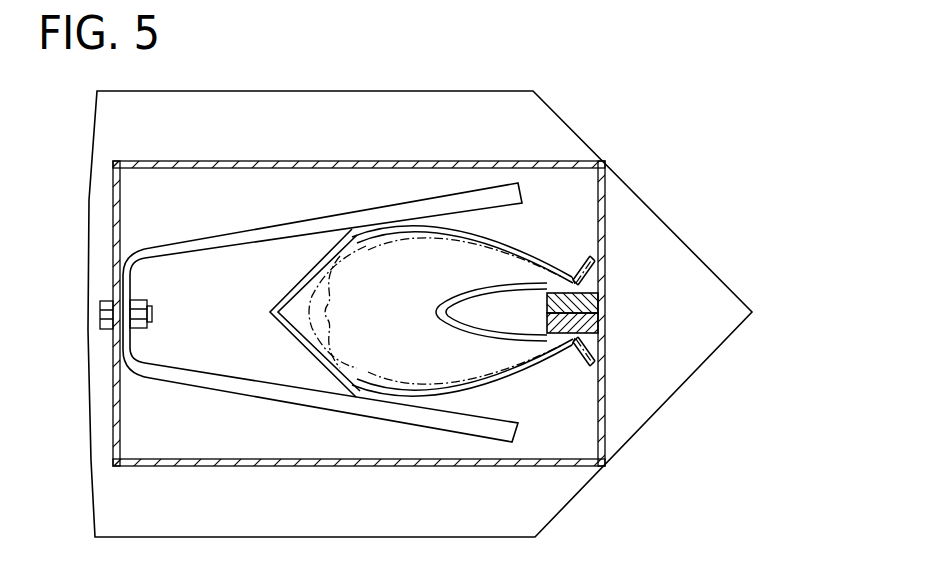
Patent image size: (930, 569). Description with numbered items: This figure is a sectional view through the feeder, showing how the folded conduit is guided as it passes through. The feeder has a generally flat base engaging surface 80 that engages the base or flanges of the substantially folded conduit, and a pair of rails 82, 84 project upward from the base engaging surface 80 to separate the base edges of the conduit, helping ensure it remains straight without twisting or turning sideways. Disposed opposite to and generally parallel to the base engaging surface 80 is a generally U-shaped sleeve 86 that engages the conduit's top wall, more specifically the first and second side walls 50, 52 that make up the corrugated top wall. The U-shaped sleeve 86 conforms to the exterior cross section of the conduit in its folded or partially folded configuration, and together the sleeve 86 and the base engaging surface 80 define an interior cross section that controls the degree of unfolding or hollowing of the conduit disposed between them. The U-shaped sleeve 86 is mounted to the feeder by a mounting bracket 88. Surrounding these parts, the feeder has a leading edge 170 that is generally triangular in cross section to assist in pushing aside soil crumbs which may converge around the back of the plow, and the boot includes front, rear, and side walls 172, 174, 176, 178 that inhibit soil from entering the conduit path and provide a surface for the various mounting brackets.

The first side wall 50 is at (365, 247).
The second side wall 52 is at (350, 370).
The base engaging surface 80 is at (605, 232).
The rail 82 is at (590, 325).
The rail 84 is at (590, 303).
The U-shaped sleeve 86 is at (310, 272).
The mounting bracket 88 is at (312, 221).
The leading edge 170 is at (752, 312).
The front wall 172 is at (603, 432).
The rear wall 174 is at (113, 212).
The side wall 176 is at (350, 161).
The side wall 178 is at (342, 466).